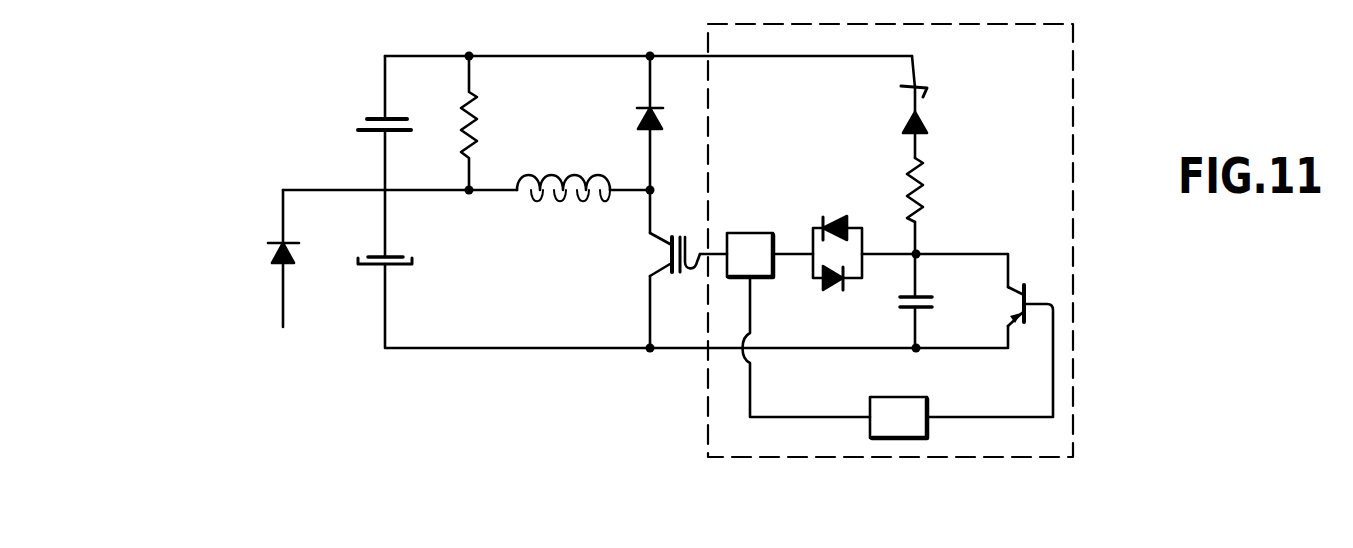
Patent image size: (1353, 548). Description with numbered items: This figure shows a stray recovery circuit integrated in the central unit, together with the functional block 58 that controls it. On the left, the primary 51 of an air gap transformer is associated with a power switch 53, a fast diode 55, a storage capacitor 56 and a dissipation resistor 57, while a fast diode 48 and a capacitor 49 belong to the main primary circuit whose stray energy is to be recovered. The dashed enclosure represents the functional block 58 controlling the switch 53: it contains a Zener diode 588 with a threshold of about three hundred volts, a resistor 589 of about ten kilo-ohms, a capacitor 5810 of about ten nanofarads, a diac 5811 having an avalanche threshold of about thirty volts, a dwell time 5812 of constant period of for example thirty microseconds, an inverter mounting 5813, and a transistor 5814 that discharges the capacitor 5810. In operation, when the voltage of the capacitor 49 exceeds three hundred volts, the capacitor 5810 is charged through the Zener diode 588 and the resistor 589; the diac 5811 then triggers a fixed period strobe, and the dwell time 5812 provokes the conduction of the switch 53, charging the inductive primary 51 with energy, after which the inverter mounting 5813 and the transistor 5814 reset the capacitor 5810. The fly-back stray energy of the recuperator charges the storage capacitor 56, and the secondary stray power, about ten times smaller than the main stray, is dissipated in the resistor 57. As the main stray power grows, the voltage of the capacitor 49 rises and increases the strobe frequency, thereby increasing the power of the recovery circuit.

The fast diode 48 is at (270, 258).
The capacitor 49 is at (403, 259).
The primary 51 is at (562, 175).
The power switch 53 is at (650, 251).
The fast diode 55 is at (643, 118).
The storage capacitor 56 is at (367, 124).
The dissipation resistor 57 is at (483, 124).
The functional block 58 is at (1065, 396).
The Zener diode 588 is at (926, 121).
The resistor 589 is at (921, 186).
The capacitor 5810 is at (904, 300).
The diac 5811 is at (838, 205).
The dwell time 5812 is at (747, 243).
The inverter mounting 5813 is at (920, 401).
The transistor 5814 is at (1020, 280).